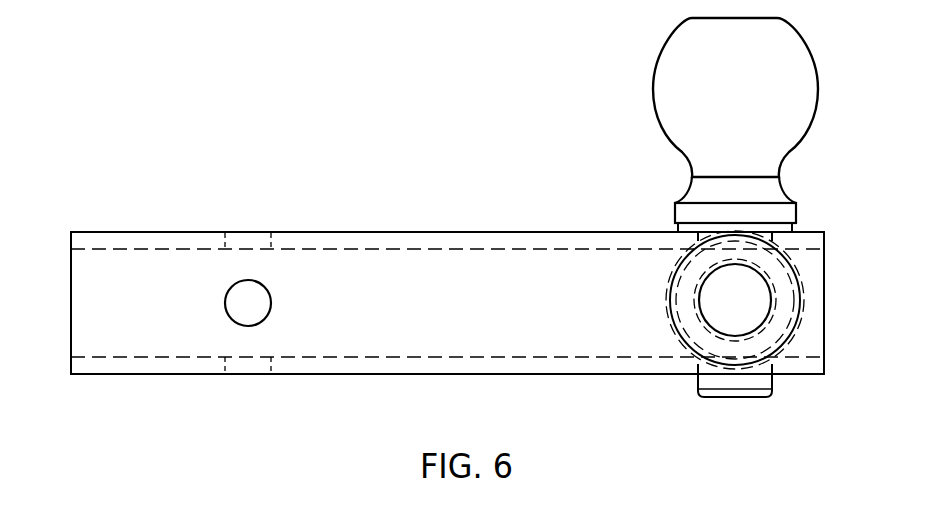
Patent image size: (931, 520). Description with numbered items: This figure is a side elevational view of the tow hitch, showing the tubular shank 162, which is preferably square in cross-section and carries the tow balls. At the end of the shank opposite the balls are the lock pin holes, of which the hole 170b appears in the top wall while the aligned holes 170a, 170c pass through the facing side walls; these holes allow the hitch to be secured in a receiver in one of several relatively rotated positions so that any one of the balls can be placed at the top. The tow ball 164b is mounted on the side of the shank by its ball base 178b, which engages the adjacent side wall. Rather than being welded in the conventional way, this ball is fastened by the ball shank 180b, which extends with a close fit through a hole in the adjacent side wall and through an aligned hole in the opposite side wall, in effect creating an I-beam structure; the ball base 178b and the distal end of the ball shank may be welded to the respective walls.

The tubular shank 162 is at (340, 231).
The lock pin hole 170b is at (230, 241).
The lock pin hole 170a is at (226, 312).
The lock pin hole 170c is at (272, 362).
The tow ball 164b is at (653, 95).
The ball base 178b is at (675, 213).
The ball shank 180b is at (742, 400).